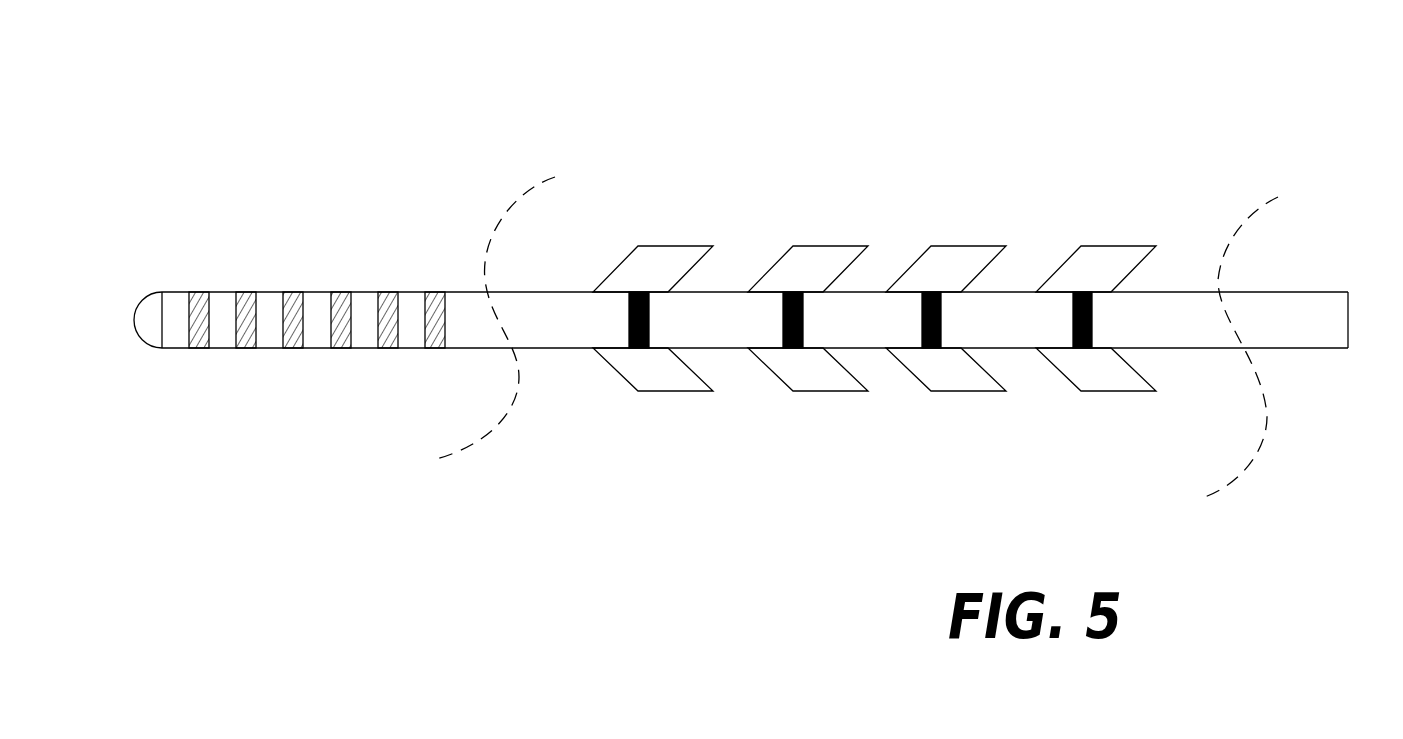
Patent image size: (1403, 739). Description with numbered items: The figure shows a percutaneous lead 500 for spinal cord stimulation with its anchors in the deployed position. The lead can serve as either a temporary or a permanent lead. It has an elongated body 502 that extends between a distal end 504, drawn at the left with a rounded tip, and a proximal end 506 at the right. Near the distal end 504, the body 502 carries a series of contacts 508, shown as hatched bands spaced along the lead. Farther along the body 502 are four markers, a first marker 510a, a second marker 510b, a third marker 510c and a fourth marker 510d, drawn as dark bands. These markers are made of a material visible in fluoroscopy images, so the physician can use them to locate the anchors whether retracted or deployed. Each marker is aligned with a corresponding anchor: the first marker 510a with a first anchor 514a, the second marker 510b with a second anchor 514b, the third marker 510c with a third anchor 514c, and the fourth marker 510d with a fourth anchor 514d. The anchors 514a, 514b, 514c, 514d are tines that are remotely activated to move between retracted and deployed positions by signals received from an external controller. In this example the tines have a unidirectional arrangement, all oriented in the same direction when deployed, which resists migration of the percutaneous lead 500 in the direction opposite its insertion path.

The percutaneous lead 500 is at (788, 182).
The body 502 is at (735, 350).
The distal end 504 is at (108, 298).
The proximal end 506 is at (1315, 268).
The contacts 508 is at (200, 318).
The first marker 510a is at (630, 322).
The second marker 510b is at (802, 318).
The third marker 510c is at (941, 318).
The fourth marker 510d is at (1091, 318).
The first anchor 514a is at (638, 280).
The second anchor 514b is at (797, 280).
The third anchor 514c is at (930, 280).
The fourth anchor 514d is at (1080, 280).